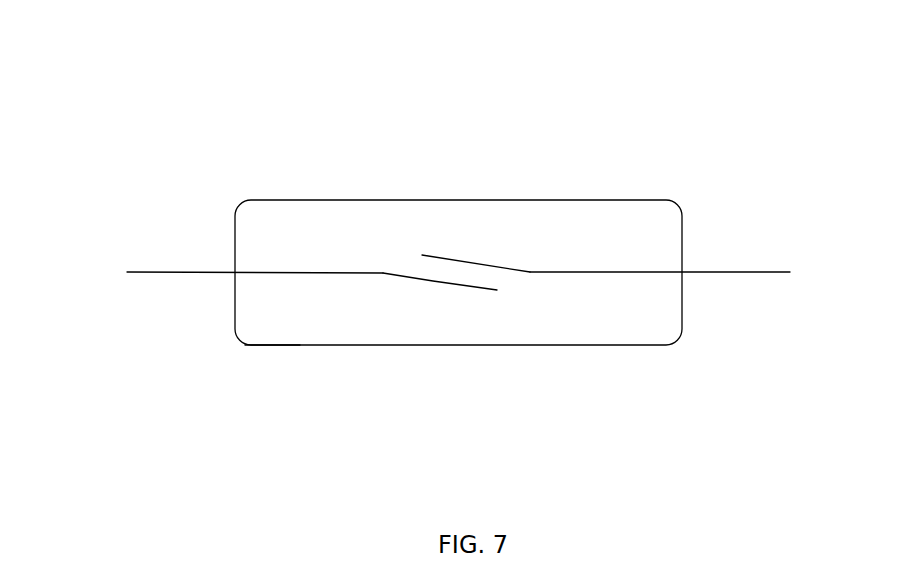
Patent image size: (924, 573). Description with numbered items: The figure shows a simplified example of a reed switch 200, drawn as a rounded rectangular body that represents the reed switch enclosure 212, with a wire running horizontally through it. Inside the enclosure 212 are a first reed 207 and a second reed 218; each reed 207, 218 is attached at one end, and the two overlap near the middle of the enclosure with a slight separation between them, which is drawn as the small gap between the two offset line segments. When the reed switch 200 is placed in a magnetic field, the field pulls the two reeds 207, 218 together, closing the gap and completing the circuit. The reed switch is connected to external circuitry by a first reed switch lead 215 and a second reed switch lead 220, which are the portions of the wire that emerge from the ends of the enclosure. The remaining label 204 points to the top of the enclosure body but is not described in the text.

The reed switch 200 is at (418, 124).
The housing body 204 is at (365, 200).
The first reed 207 is at (180, 272).
The reed switch enclosure 212 is at (258, 345).
The first reed switch lead 215 is at (433, 281).
The second reed 218 is at (483, 262).
The second reed switch lead 220 is at (718, 272).